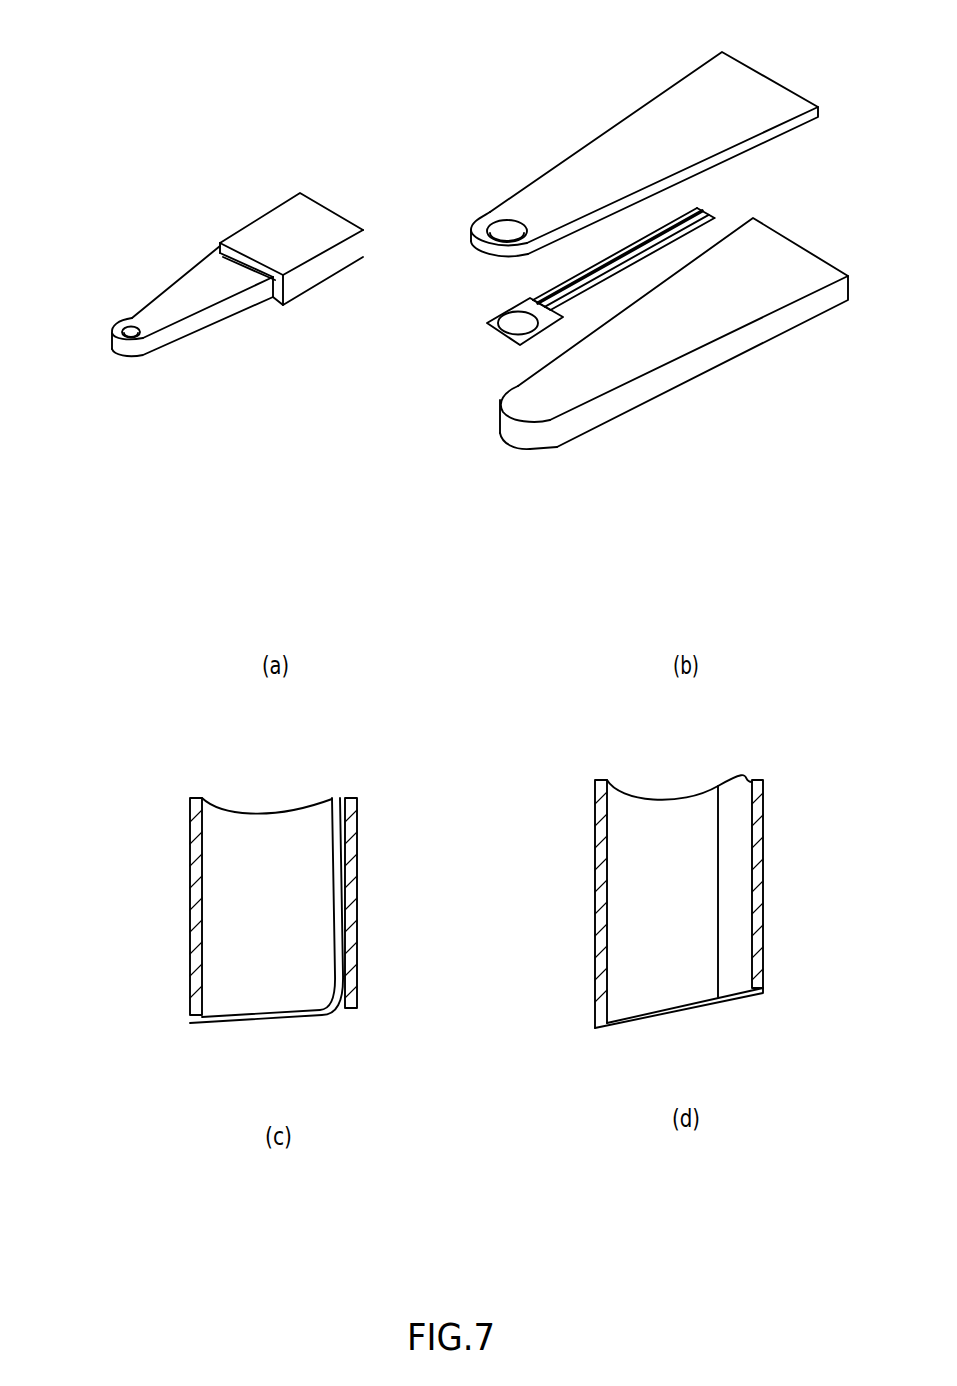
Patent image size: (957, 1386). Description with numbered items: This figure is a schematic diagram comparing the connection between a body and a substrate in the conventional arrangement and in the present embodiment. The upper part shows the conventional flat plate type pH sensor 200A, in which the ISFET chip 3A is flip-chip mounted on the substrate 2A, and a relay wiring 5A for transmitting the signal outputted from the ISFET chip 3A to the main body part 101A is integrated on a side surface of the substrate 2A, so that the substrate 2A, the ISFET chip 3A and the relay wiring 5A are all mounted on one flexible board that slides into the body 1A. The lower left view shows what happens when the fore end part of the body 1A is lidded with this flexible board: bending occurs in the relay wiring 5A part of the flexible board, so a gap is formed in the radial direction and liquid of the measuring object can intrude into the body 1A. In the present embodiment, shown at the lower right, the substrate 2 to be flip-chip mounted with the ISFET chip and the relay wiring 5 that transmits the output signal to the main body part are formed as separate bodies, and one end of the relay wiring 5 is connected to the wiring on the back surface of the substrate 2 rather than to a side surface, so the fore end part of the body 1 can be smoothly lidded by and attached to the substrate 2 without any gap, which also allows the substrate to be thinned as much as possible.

The pH sensor 200A is at (197, 236).
The main body part 101A is at (290, 197).
The body 1A is at (150, 303).
The relay wiring 5A is at (563, 297).
The ISFET chip 3A is at (502, 316).
The substrate 2A is at (517, 318).
The body 1 is at (605, 780).
The relay wiring 5 is at (717, 915).
The substrate 2 is at (663, 1020).